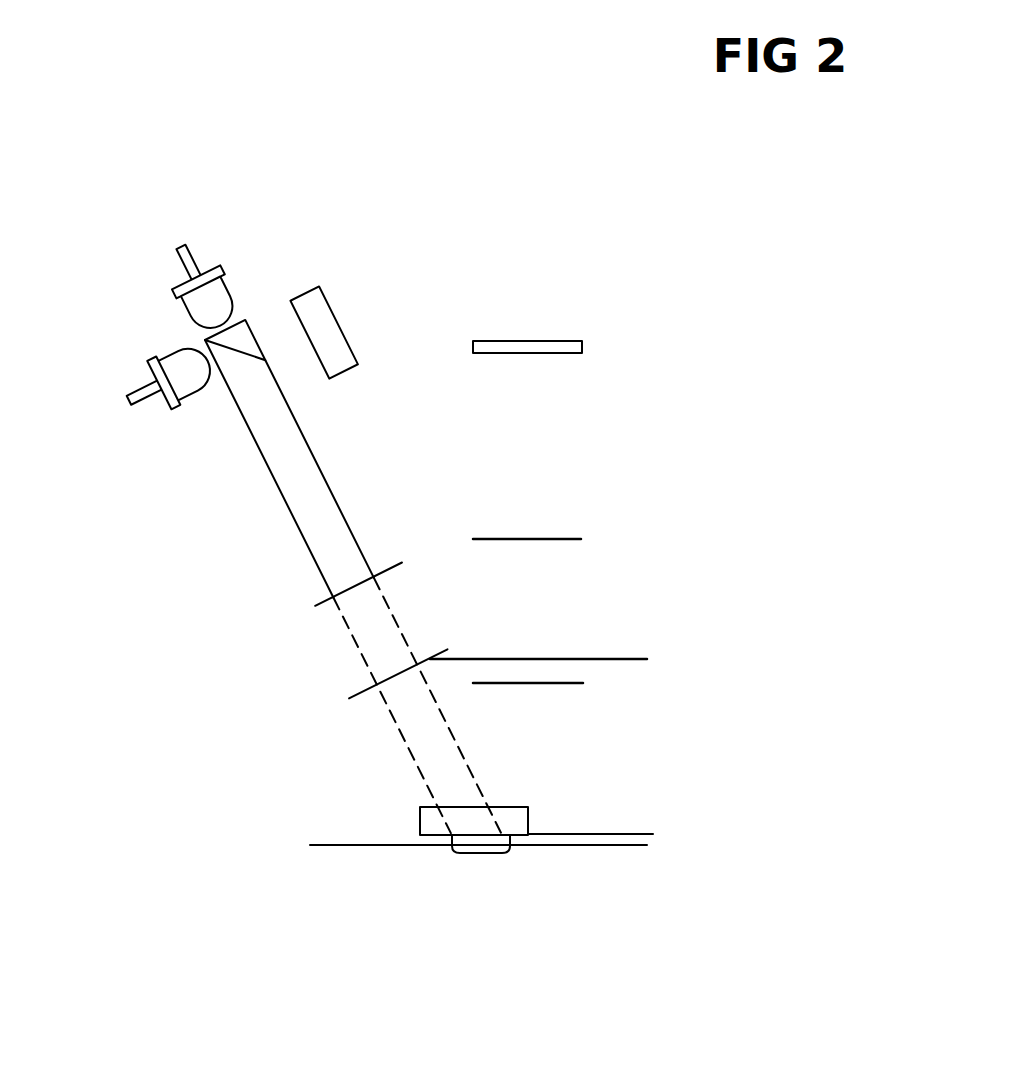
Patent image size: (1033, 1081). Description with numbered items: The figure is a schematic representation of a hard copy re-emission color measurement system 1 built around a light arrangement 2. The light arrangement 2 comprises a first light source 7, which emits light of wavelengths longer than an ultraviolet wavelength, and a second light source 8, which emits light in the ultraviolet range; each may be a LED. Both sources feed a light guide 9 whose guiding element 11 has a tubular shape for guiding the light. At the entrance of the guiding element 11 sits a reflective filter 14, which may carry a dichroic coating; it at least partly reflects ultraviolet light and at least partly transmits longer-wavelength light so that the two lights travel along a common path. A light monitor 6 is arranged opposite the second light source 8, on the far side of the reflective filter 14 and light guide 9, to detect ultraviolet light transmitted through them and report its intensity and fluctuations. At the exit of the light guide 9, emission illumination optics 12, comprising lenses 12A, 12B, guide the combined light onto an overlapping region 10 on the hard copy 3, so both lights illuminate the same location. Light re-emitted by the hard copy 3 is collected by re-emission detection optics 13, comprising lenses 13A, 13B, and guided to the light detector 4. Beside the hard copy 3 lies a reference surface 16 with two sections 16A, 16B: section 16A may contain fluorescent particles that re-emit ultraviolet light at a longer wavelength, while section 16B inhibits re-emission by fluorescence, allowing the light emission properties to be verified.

The hard copy re-emission color measurement system 1 is at (528, 215).
The light arrangement 2 is at (167, 323).
The hard copy 3 is at (353, 845).
The light detector 4 is at (582, 341).
The light monitor 6 is at (330, 310).
The first light source 7 is at (222, 287).
The second light source 8 is at (162, 405).
The light guide 9 is at (220, 449).
The overlapping region 10 is at (482, 856).
The guiding element 11 is at (273, 488).
The emission illumination optics 12 is at (342, 648).
The lens 12A is at (315, 607).
The lens 12B is at (565, 660).
The re-emission detection optics 13 is at (582, 593).
The lens 13A is at (560, 684).
The lens 13B is at (563, 539).
The reflective filter 14 is at (242, 352).
The reference surface 16 is at (598, 833).
The section of the reference surface 16A is at (547, 834).
The section of the reference surface 16B is at (638, 834).